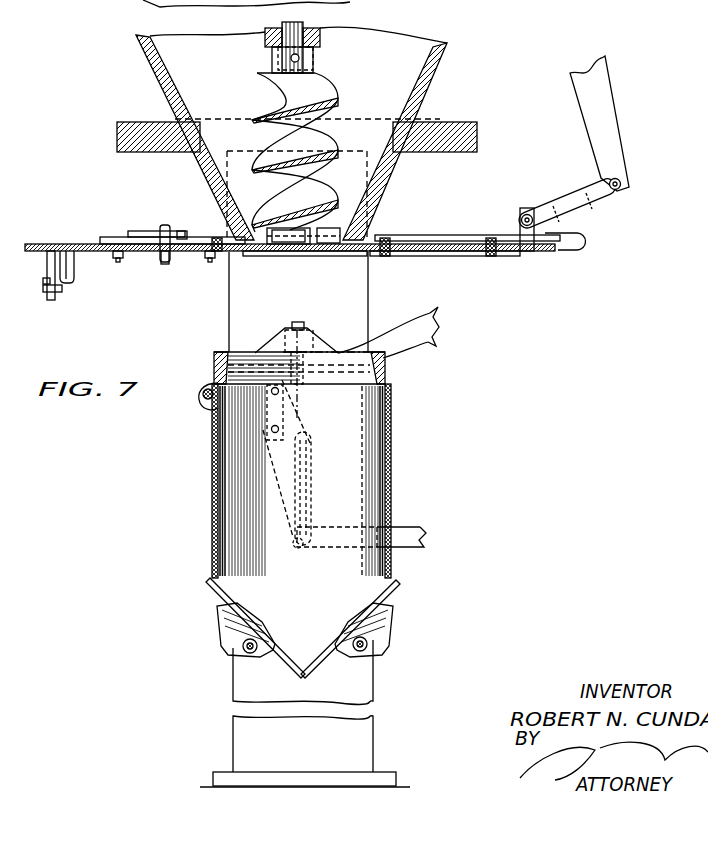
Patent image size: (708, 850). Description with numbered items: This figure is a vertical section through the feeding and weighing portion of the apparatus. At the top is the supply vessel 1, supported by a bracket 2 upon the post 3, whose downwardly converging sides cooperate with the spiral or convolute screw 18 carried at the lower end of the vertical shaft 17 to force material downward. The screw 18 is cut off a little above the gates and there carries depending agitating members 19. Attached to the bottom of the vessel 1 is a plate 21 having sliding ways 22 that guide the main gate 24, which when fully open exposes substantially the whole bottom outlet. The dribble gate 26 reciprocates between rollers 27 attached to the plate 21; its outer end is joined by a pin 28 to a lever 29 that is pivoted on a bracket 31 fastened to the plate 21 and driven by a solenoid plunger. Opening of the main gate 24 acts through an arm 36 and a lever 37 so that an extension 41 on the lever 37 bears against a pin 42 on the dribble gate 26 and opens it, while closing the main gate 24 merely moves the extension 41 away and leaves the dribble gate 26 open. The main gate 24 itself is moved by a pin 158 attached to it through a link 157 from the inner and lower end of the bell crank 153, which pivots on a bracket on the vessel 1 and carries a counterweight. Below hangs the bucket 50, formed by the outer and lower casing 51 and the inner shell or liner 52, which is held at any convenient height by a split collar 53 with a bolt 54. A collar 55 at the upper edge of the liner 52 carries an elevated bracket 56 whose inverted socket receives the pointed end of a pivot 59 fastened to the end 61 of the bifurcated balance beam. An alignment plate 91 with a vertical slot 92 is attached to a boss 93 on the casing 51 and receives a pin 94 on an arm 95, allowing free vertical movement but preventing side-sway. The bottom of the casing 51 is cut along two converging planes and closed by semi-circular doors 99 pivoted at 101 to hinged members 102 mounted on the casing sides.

The supply vessel 1 is at (440, 70).
The bracket 2 is at (462, 120).
The post 3 is at (362, 308).
The vertical shaft 17 is at (318, 44).
The spiral or convolute screw 18 is at (330, 96).
The agitating members 19 is at (263, 250).
The plate 21 is at (216, 238).
The sliding ways 22 is at (470, 256).
The main gate 24 is at (428, 256).
The dribble gate 26 is at (164, 264).
The rollers 27 is at (118, 262).
The pin 28 is at (47, 270).
The lever 29 is at (45, 290).
The bracket 31 is at (73, 281).
The arm 36 is at (586, 238).
The lever 37 is at (153, 237).
The extension 41 is at (181, 231).
The pin 42 is at (165, 225).
The bucket 50 is at (320, 601).
The casing 51 is at (212, 484).
The inner shell or liner 52 is at (215, 372).
The split collar 53 is at (203, 401).
The bolt 54 is at (203, 393).
The collar 55 is at (240, 355).
The bracket 56 is at (306, 322).
The pivot 59 is at (305, 336).
The end of balance beam 61 is at (432, 343).
The alignment plate 91 is at (310, 442).
The vertical slot 92 is at (305, 480).
The boss 93 is at (287, 420).
The pin 94 is at (296, 548).
The arm 95 is at (424, 545).
The doors 99 is at (292, 670).
The pivotal attachment 101 is at (244, 652).
The hinged members 102 is at (232, 642).
The bell crank 153 is at (612, 118).
The link 157 is at (566, 195).
The pin 158 is at (527, 208).